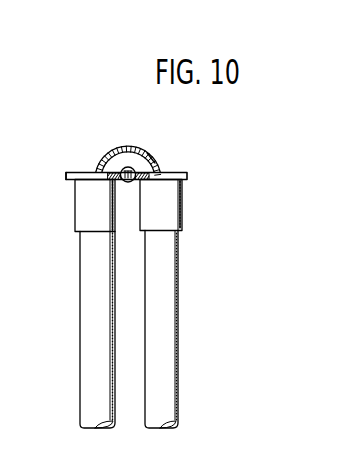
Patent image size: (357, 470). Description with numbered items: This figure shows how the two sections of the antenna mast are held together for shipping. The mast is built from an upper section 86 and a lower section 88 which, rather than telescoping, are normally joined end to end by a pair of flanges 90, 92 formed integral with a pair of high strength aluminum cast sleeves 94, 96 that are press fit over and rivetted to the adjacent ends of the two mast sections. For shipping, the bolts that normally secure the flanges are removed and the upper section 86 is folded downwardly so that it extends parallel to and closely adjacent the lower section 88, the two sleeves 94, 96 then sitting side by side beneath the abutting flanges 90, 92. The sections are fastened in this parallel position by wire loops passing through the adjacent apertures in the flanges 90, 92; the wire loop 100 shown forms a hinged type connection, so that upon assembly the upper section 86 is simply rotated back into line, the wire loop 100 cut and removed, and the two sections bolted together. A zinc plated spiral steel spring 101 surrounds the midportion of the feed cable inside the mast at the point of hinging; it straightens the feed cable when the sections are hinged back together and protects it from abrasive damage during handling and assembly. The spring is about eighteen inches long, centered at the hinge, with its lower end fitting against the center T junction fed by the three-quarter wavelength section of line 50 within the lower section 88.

The three-quarter wavelength section of line 50 is at (147, 153).
The upper mast section 86 is at (168, 303).
The lower mast section 88 is at (80, 298).
The flange 90 is at (188, 174).
The flange 92 is at (65, 175).
The cast sleeve 94 is at (184, 222).
The cast sleeve 96 is at (82, 217).
The wire loop 100 is at (128, 167).
The spiral steel spring 101 is at (107, 155).